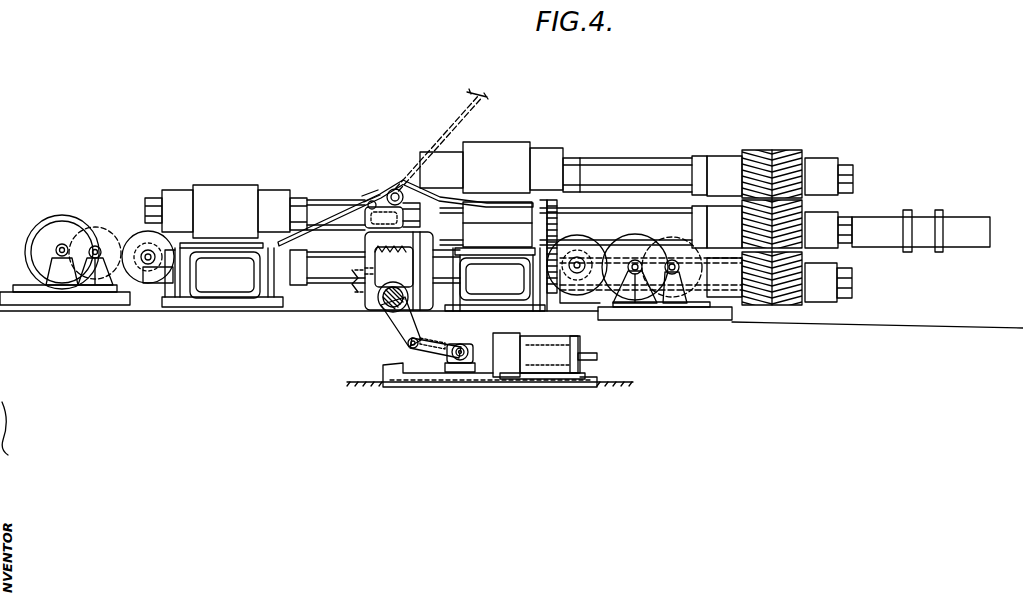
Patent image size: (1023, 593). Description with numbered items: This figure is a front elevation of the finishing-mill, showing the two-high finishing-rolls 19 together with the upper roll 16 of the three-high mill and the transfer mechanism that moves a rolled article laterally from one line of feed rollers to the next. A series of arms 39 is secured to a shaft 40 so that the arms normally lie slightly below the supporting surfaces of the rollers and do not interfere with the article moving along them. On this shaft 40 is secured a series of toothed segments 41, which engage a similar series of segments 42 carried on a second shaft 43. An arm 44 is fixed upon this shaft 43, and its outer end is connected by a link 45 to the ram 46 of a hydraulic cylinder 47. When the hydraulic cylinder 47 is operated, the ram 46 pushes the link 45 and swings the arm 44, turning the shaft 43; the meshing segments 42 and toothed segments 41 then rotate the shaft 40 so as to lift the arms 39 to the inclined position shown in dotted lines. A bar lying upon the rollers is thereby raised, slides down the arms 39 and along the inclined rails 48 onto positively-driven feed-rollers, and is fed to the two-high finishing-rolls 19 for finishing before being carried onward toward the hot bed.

The upper roll 16 is at (500, 167).
The two-high finishing-rolls 19 is at (218, 190).
The arms 39 is at (494, 205).
The shaft 40 is at (392, 189).
The toothed segments 41 is at (358, 233).
The segments 42 is at (358, 285).
The shaft 43 is at (381, 310).
The arm 44 is at (406, 342).
The link 45 is at (437, 343).
The ram 46 is at (468, 345).
The hydraulic cylinder 47 is at (553, 343).
The inclined rails 48 is at (322, 207).